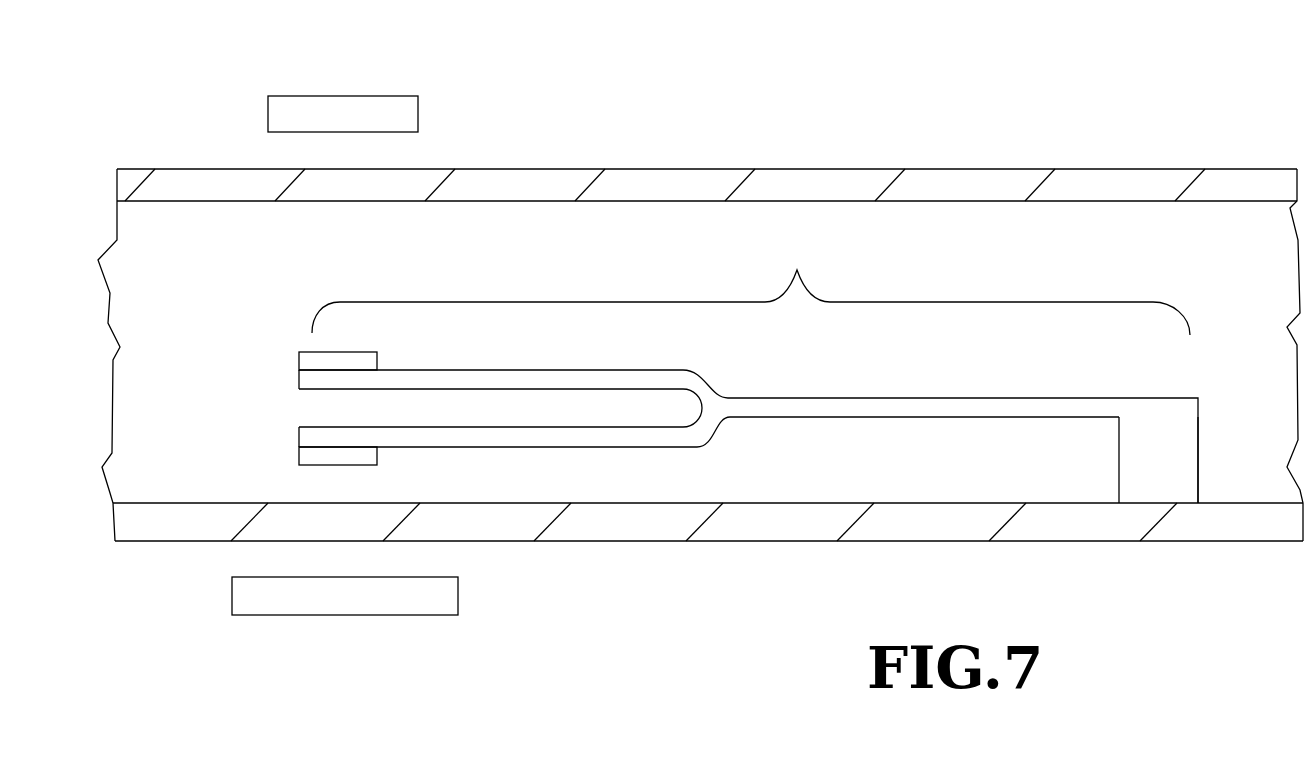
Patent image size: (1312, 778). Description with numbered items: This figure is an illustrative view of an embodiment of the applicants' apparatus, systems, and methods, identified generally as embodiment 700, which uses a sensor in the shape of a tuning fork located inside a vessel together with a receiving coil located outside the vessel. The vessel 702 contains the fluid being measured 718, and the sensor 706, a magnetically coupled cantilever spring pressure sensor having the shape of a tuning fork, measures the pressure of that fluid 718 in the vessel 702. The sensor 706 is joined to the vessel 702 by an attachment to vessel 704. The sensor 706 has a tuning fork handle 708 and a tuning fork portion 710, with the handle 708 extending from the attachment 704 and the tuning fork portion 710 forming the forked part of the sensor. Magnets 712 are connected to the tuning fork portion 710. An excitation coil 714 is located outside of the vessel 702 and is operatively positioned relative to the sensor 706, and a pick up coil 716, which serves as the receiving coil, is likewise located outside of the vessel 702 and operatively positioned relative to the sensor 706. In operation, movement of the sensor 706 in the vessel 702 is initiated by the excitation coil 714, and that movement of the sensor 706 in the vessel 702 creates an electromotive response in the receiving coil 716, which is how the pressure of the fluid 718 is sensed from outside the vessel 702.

The embodiment of apparatus, systems, and methods 700 is at (1020, 71).
The vessel 702 is at (822, 169).
The attachment to vessel 704 is at (1119, 460).
The sensor with the shape of a tuning fork 706 is at (751, 281).
The tuning fork handle 708 is at (968, 398).
The tuning fork portion 710 is at (655, 370).
The magnets 712 is at (299, 448).
The excitation coil 714 is at (375, 96).
The pick up coil 716 is at (430, 615).
The fluid being measured 718 is at (837, 458).